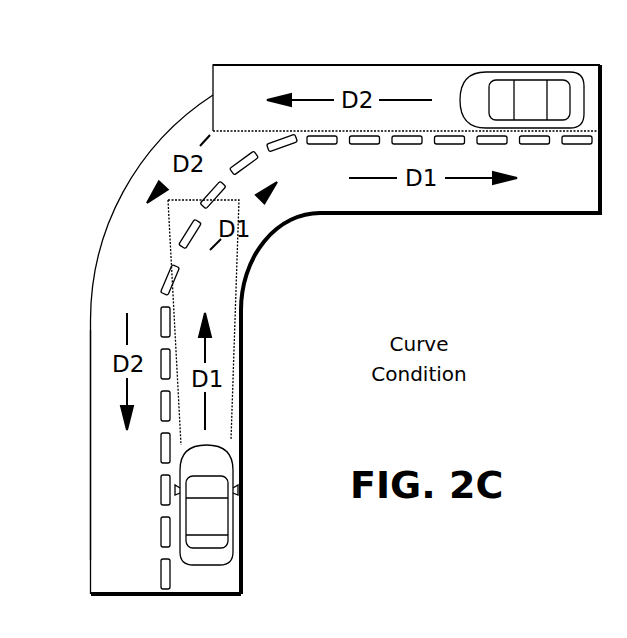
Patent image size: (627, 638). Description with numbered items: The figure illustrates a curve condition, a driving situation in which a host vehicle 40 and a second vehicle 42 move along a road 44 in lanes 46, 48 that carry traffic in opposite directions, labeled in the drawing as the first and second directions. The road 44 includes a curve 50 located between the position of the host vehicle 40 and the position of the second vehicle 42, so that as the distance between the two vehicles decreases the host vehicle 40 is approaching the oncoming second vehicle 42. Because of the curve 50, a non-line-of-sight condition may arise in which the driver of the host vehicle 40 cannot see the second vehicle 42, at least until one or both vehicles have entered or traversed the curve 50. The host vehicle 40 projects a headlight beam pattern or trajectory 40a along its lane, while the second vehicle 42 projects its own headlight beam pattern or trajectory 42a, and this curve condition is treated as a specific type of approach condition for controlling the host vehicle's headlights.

The host vehicle 40 is at (213, 517).
The headlight beam pattern or trajectory 40a is at (247, 310).
The second vehicle 42 is at (529, 93).
The headlight beam pattern or trajectory 42a is at (326, 63).
The road 44 is at (90, 392).
The lane 46 is at (437, 197).
The lane 48 is at (127, 524).
The curve 50 is at (145, 117).